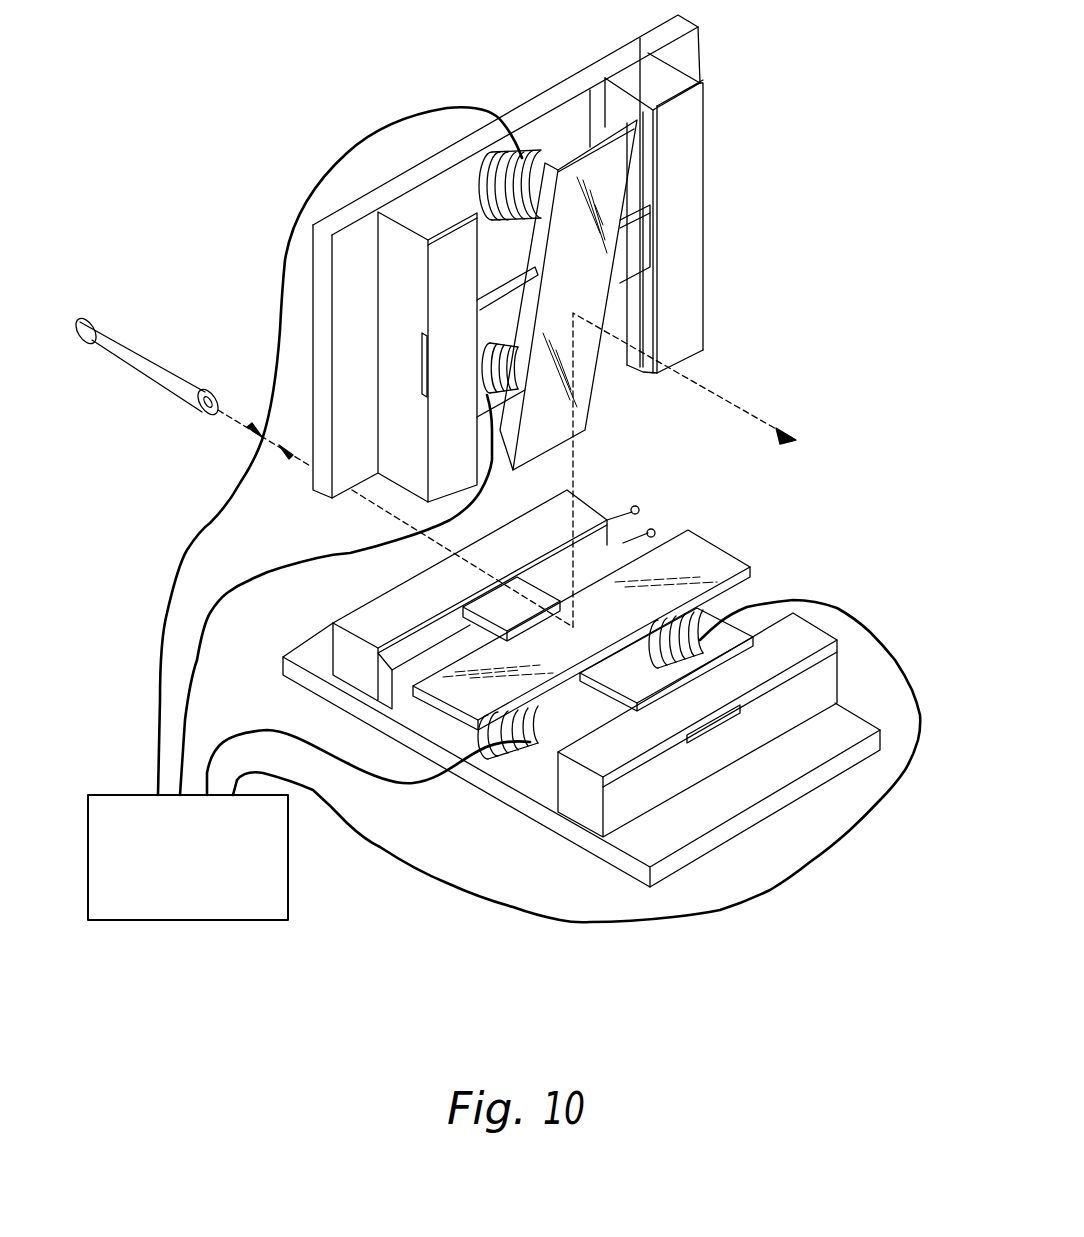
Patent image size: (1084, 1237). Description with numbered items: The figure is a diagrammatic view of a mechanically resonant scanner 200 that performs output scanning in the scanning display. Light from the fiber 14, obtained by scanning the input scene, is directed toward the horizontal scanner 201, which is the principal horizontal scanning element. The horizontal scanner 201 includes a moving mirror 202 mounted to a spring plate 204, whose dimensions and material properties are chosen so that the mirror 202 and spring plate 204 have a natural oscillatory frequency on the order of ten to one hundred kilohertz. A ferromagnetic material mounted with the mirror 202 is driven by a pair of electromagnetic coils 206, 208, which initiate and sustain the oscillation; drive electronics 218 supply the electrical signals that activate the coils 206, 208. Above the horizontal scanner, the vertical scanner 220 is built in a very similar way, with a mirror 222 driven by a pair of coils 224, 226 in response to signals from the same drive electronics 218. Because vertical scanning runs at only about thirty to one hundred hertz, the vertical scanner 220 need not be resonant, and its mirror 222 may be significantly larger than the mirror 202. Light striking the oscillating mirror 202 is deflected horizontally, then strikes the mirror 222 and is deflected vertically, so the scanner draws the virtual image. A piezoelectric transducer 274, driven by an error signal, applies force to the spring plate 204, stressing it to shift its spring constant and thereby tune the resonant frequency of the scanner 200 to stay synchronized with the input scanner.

The mechanically resonant scanner 200 is at (232, 112).
The fiber 14 is at (153, 375).
The vertical scanner 220 is at (733, 330).
The mirror 222 is at (583, 380).
The coil 224 is at (543, 150).
The coil 226 is at (487, 372).
The horizontal scanner 201 is at (934, 775).
The piezoelectric transducer 274 is at (405, 703).
The moving mirror 202 is at (480, 693).
The spring plate 204 is at (635, 667).
The electromagnetic coil 206 is at (527, 745).
The electromagnetic coil 208 is at (705, 640).
The drive electronics 218 is at (293, 905).